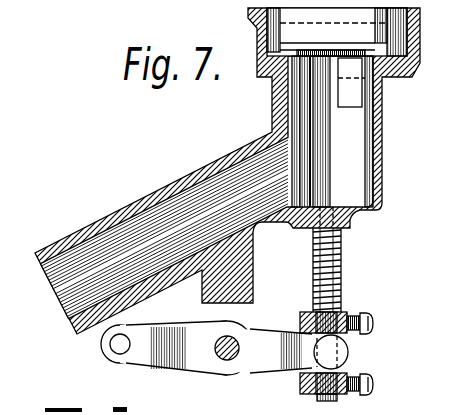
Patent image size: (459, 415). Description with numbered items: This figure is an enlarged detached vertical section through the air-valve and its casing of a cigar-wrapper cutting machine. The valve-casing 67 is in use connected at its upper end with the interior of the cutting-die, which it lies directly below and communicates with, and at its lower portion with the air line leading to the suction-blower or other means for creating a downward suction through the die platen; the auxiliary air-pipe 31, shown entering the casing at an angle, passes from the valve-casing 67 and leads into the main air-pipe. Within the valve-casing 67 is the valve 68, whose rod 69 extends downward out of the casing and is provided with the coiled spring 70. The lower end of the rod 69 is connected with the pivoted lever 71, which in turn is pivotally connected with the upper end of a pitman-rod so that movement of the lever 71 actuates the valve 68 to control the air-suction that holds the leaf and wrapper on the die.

The auxiliary air-pipe 31 is at (97, 219).
The valve-casing 67 is at (343, 55).
The valve 68 is at (332, 131).
The rod 69 is at (345, 311).
The coiled spring 70 is at (346, 255).
The pivoted lever 71 is at (206, 348).